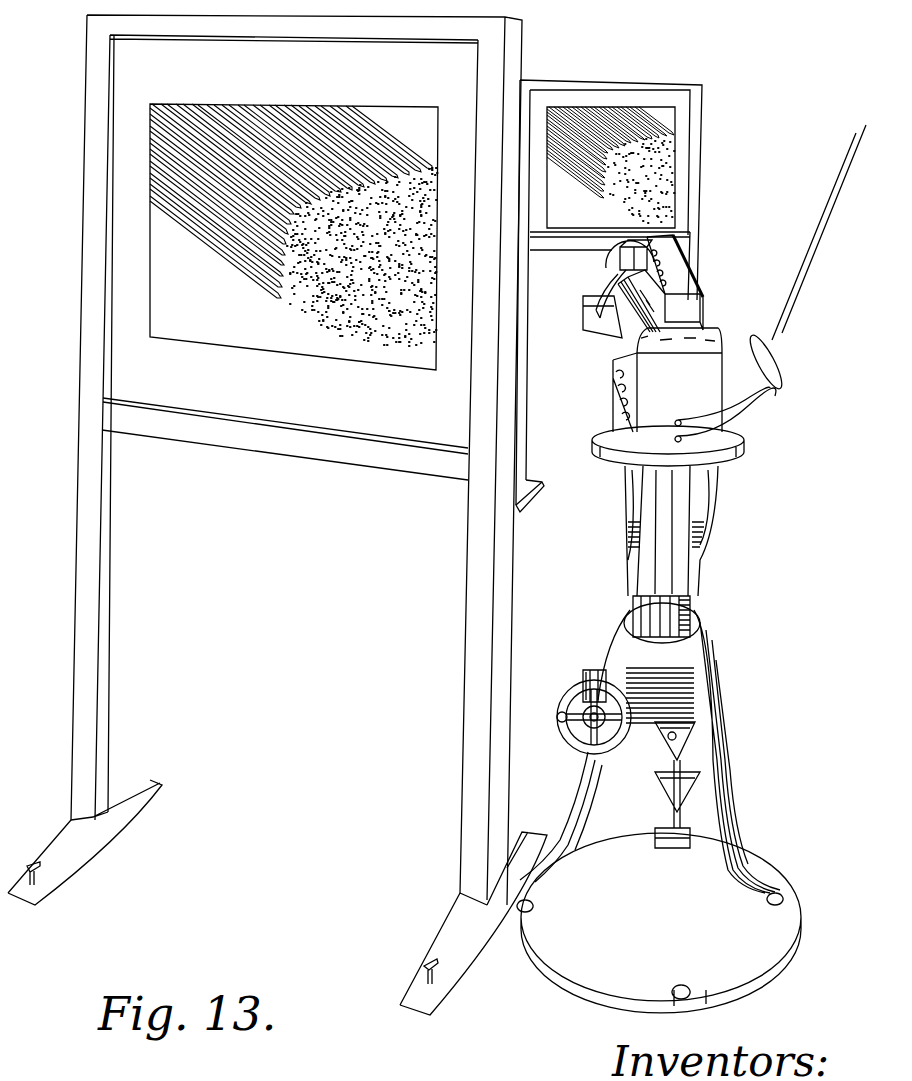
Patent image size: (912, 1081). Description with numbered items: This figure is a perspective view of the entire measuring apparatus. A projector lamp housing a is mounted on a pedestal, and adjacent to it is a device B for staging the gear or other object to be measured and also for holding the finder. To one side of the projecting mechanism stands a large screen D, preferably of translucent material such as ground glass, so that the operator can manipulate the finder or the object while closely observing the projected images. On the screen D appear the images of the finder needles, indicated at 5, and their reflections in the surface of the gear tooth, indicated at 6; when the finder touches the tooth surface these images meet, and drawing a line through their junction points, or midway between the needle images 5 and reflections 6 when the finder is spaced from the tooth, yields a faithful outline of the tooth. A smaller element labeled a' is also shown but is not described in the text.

The screen D is at (282, 447).
The images of the finder needles 5 is at (216, 222).
The reflections of the finder needles 6 is at (432, 178).
The auxiliary screen a' is at (633, 296).
The staging device B is at (590, 322).
The projector lamp housing a is at (691, 569).